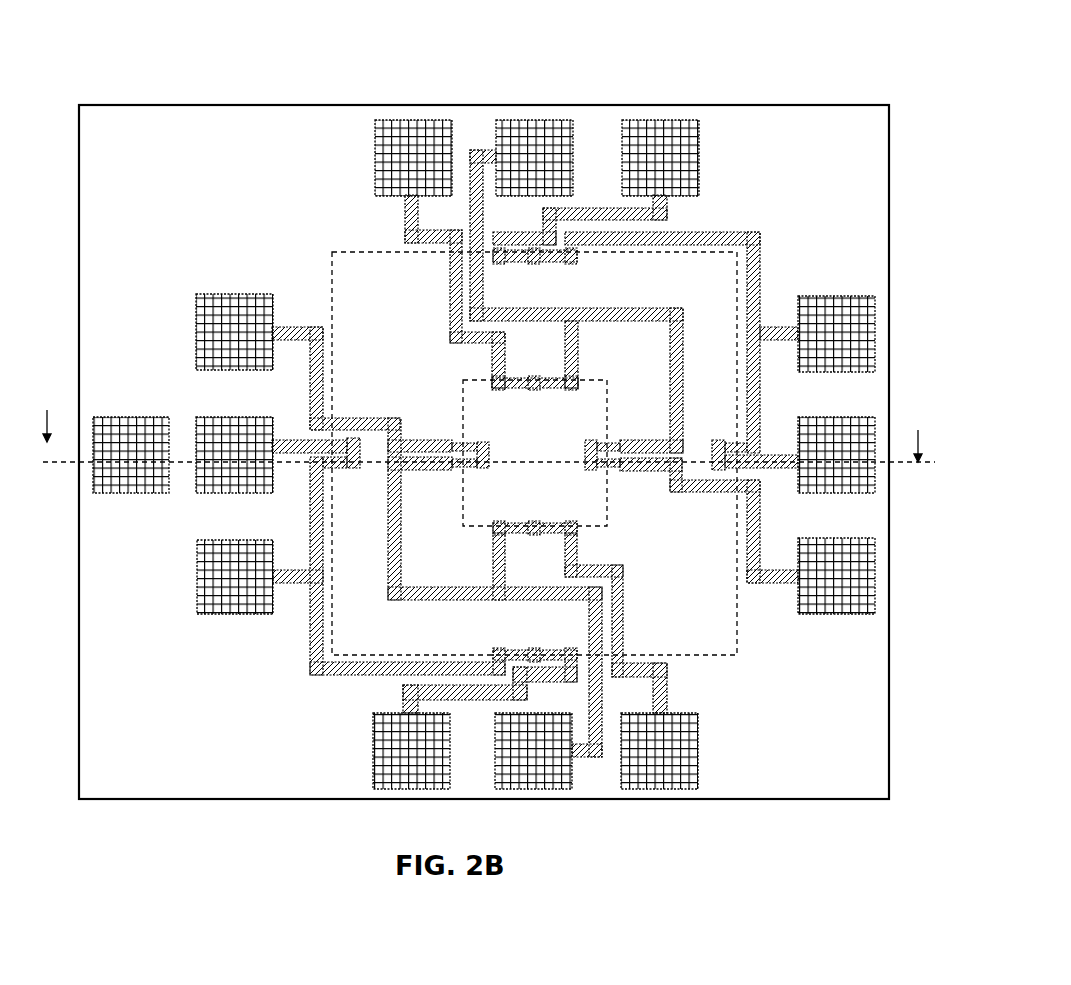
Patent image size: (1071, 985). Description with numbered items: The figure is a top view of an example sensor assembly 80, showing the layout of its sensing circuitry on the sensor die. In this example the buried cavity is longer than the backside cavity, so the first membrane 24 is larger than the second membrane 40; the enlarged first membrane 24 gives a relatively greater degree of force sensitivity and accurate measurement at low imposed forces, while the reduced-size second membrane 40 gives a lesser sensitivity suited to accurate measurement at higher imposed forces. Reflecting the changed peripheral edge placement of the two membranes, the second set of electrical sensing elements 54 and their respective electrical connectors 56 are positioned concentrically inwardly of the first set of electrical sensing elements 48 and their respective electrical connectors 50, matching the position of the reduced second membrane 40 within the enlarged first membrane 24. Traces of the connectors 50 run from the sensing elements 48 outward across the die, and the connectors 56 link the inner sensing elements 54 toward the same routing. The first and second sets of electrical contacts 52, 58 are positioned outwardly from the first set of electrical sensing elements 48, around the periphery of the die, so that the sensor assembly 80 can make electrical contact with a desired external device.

The sensor assembly 80 is at (846, 46).
The first membrane 24 is at (716, 629).
The second membrane 40 is at (470, 400).
The second set of electrical contacts 58 is at (575, 157).
The first set of electrical contacts 52 is at (698, 150).
The first set of electrical connectors 50 is at (715, 232).
The first set of electrical sensing elements 48 is at (498, 264).
The second set of electrical sensing elements 54 is at (558, 380).
The second set of electrical connectors 56 is at (578, 368).